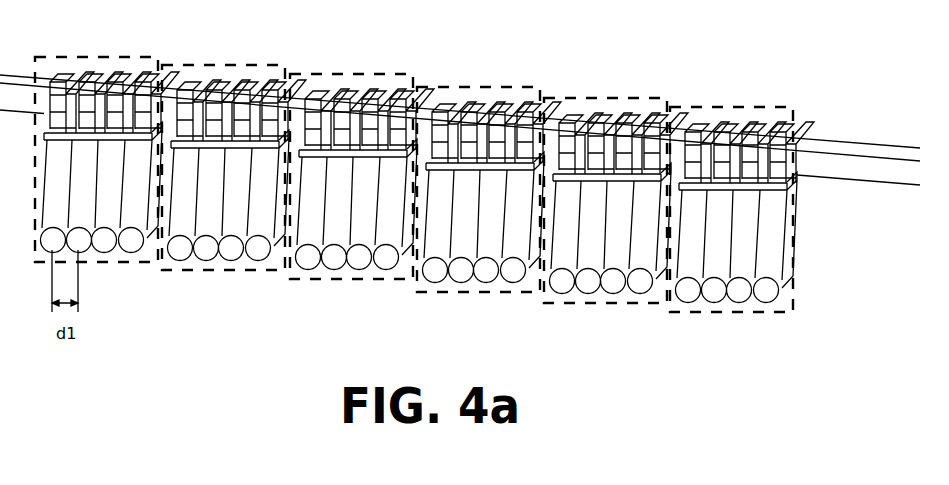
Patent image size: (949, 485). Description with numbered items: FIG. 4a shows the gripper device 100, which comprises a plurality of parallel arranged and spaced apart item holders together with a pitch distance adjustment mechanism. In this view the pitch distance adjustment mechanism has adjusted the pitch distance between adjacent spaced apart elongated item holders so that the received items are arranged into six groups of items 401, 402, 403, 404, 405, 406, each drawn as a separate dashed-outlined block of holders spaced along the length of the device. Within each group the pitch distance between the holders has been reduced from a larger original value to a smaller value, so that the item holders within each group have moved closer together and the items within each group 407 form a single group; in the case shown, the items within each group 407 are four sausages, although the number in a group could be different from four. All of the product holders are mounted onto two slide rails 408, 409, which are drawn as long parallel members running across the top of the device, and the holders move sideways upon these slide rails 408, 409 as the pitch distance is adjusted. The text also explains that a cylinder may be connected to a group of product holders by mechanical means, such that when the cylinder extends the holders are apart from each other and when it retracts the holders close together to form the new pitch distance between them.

The gripper device 100 is at (472, 221).
The first group of items 401 is at (108, 265).
The second group of items 402 is at (222, 270).
The third group of items 403 is at (333, 280).
The fourth group of items 404 is at (482, 293).
The fifth group of items 405 is at (605, 305).
The sixth group of items 406 is at (774, 253).
The items within each group 407 is at (773, 292).
The slide rail 408 is at (823, 160).
The slide rail 409 is at (858, 148).